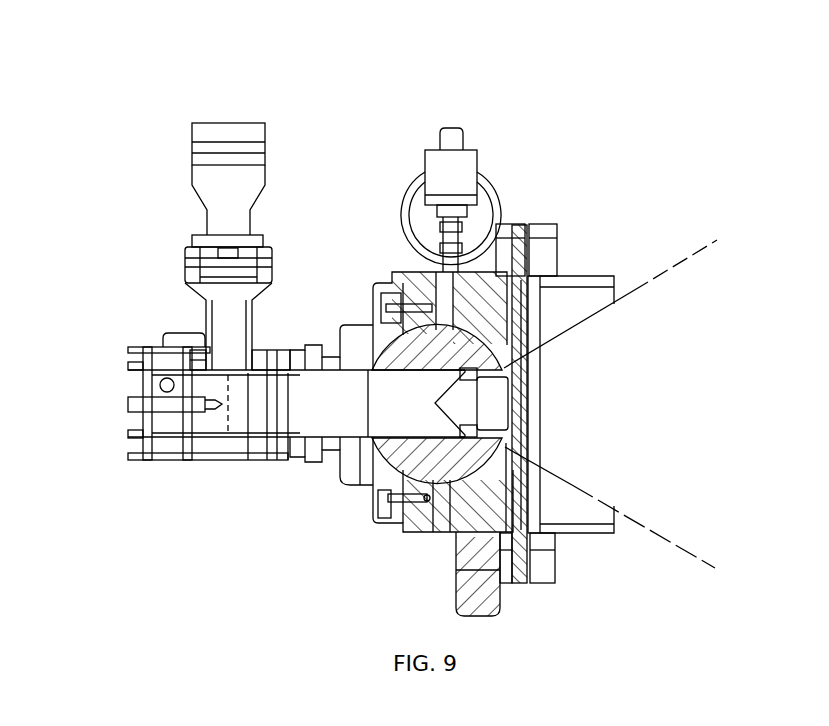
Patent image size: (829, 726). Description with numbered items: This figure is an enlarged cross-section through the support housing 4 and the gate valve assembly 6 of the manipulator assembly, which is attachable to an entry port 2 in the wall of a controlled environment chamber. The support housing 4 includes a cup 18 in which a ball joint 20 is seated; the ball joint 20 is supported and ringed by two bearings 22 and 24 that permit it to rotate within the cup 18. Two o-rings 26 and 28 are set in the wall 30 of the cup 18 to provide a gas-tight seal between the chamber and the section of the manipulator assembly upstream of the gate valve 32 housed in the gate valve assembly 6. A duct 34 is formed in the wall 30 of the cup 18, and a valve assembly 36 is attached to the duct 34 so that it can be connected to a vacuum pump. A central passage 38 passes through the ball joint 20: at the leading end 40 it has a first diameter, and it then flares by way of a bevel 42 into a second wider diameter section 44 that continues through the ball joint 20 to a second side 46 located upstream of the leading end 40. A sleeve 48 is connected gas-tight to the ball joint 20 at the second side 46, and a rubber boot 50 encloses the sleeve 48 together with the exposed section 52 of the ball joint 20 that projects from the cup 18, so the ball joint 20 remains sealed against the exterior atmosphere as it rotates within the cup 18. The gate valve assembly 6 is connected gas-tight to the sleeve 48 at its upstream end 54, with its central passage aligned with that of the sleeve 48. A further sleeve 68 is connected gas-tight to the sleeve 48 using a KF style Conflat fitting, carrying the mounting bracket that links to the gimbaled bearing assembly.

The entry port 2 is at (583, 300).
The support housing 4 is at (468, 91).
The gate valve assembly 6 is at (245, 95).
The cup 18 is at (451, 537).
The ball joint 20 is at (398, 518).
The bearing 22 is at (553, 258).
The bearing 24 is at (377, 322).
The o-ring 26 is at (493, 277).
The o-ring 28 is at (440, 312).
The wall of the cup 30 is at (490, 257).
The gate valve 32 is at (230, 432).
The duct 34 is at (462, 277).
The valve assembly 36 is at (470, 215).
The central passage 38 is at (332, 460).
The leading end 40 is at (493, 403).
The bevel 42 is at (505, 372).
The second wider diameter section 44 is at (417, 390).
The second side 46 is at (356, 367).
The sleeve 48 is at (303, 458).
The rubber boot 50 is at (370, 368).
The exposed section 52 is at (365, 487).
The upstream end 54 is at (286, 358).
The sleeve 68 is at (132, 447).